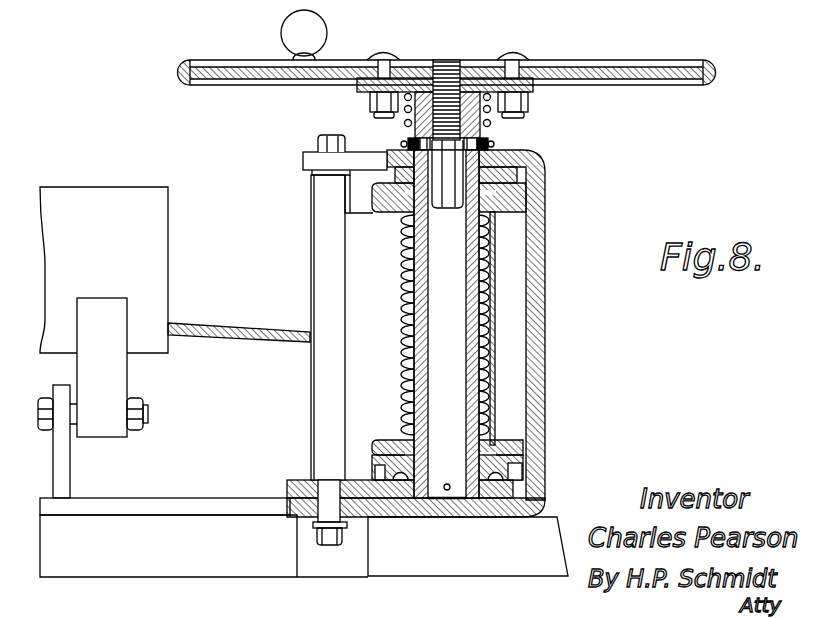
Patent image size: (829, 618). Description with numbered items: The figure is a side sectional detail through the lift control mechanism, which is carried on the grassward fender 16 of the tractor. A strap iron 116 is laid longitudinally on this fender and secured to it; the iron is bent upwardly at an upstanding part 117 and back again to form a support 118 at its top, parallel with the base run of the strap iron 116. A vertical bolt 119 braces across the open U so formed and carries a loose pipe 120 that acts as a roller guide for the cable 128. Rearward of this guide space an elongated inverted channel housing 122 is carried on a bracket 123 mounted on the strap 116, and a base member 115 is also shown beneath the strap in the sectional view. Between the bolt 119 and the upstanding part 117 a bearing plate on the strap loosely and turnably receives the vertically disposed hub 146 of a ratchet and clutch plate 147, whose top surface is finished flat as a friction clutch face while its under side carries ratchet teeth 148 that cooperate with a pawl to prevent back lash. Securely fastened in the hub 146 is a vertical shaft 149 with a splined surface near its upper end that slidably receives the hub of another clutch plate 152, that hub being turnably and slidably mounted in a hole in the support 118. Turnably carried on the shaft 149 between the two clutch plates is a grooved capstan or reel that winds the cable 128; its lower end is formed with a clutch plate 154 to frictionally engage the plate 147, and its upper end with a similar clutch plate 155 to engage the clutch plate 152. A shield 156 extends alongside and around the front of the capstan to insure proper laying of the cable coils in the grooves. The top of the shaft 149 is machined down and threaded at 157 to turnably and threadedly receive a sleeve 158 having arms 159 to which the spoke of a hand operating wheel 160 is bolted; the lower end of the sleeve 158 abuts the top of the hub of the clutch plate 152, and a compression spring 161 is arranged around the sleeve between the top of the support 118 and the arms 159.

The grassward fender 16 is at (131, 558).
The base plate 115 is at (530, 506).
The strap iron 116 is at (148, 499).
The upstanding part 117 is at (542, 252).
The support 118 is at (304, 160).
The vertical bolt 119 is at (300, 490).
The loose pipe 120 is at (312, 370).
The inverted channel housing 122 is at (152, 203).
The bracket 123 is at (66, 459).
The cable 128 is at (200, 328).
The hub 146 is at (470, 490).
The ratchet and clutch plate 147 is at (522, 461).
The ratchet teeth 148 is at (383, 470).
The vertical shaft 149 is at (437, 238).
The clutch plate 152 is at (510, 183).
The clutch plate 154 is at (523, 443).
The clutch plate 155 is at (406, 295).
The shield 156 is at (496, 222).
The threaded portion 157 is at (425, 78).
The sleeve 158 is at (491, 114).
The arms 159 is at (527, 72).
The hand operating wheel 160 is at (655, 52).
The compression spring 161 is at (496, 146).